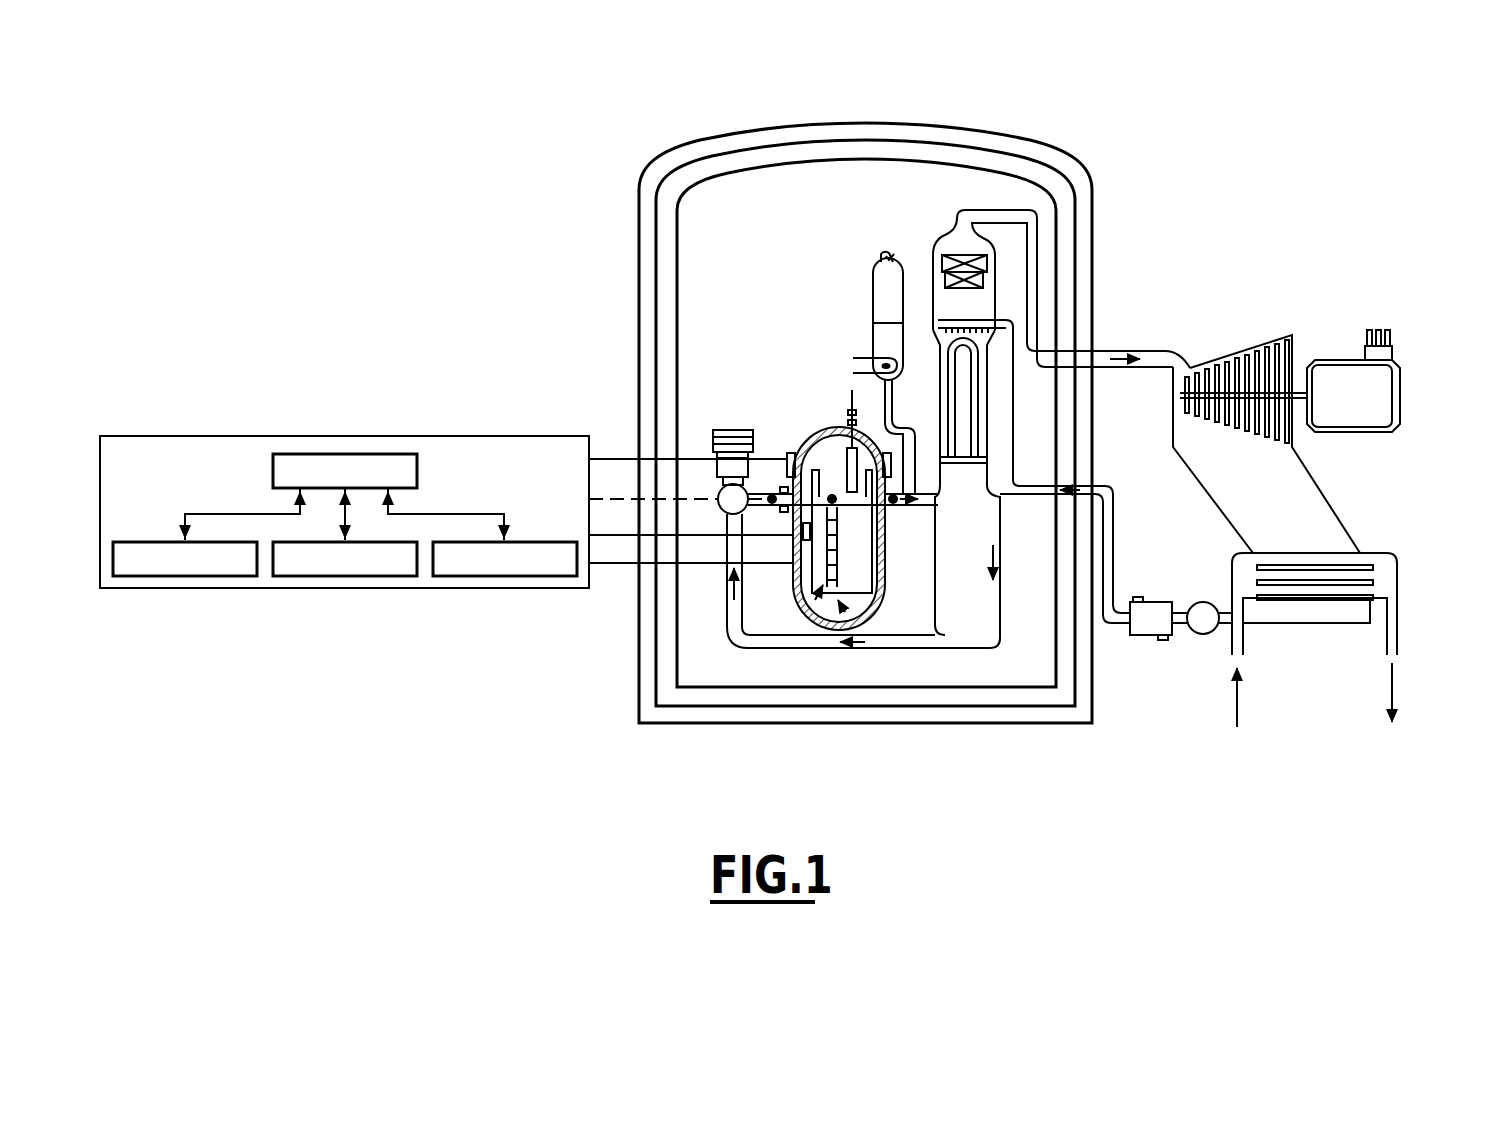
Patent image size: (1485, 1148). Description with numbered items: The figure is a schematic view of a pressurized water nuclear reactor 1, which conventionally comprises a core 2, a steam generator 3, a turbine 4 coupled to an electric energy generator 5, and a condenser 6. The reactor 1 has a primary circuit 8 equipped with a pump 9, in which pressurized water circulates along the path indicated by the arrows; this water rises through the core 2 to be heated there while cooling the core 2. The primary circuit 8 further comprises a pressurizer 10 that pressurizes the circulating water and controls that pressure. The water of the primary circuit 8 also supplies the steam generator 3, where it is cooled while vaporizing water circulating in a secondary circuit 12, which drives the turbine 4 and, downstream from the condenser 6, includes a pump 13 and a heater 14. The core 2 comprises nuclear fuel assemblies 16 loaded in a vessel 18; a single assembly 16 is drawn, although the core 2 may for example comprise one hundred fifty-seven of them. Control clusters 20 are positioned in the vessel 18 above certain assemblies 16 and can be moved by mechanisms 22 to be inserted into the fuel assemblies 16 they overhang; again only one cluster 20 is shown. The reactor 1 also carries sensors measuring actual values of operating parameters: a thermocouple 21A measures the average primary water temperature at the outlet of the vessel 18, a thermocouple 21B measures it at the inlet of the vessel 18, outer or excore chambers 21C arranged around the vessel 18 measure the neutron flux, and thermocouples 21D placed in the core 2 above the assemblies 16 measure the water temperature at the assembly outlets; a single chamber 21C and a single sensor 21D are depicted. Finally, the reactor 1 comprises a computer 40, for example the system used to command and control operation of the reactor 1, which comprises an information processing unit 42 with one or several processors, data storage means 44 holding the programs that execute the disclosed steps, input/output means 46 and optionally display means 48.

The pressurized water nuclear reactor 1 is at (917, 415).
The core 2 is at (844, 528).
The steam generator 3 is at (1001, 414).
The turbine 4 is at (1266, 405).
The electric energy generator 5 is at (1389, 381).
The condenser 6 is at (1316, 589).
The primary circuit 8 is at (837, 584).
The pump 9 is at (743, 430).
The pressurizer 10 is at (861, 308).
The secondary circuit 12 is at (1131, 327).
The pump 13 is at (1189, 661).
The heater 14 is at (1159, 579).
The nuclear fuel assemblies 16 is at (789, 636).
The vessel 18 is at (930, 584).
The control clusters 20 is at (897, 436).
The thermocouple 21A is at (938, 515).
The thermocouple 21B is at (748, 440).
The outer chambers 21C is at (777, 566).
The thermocouples 21D is at (809, 436).
The mechanisms 22 is at (826, 410).
The computer 40 is at (446, 478).
The information processing unit 42 is at (345, 471).
The data storage means 44 is at (185, 559).
The input/output means 46 is at (345, 559).
The display means 48 is at (505, 559).